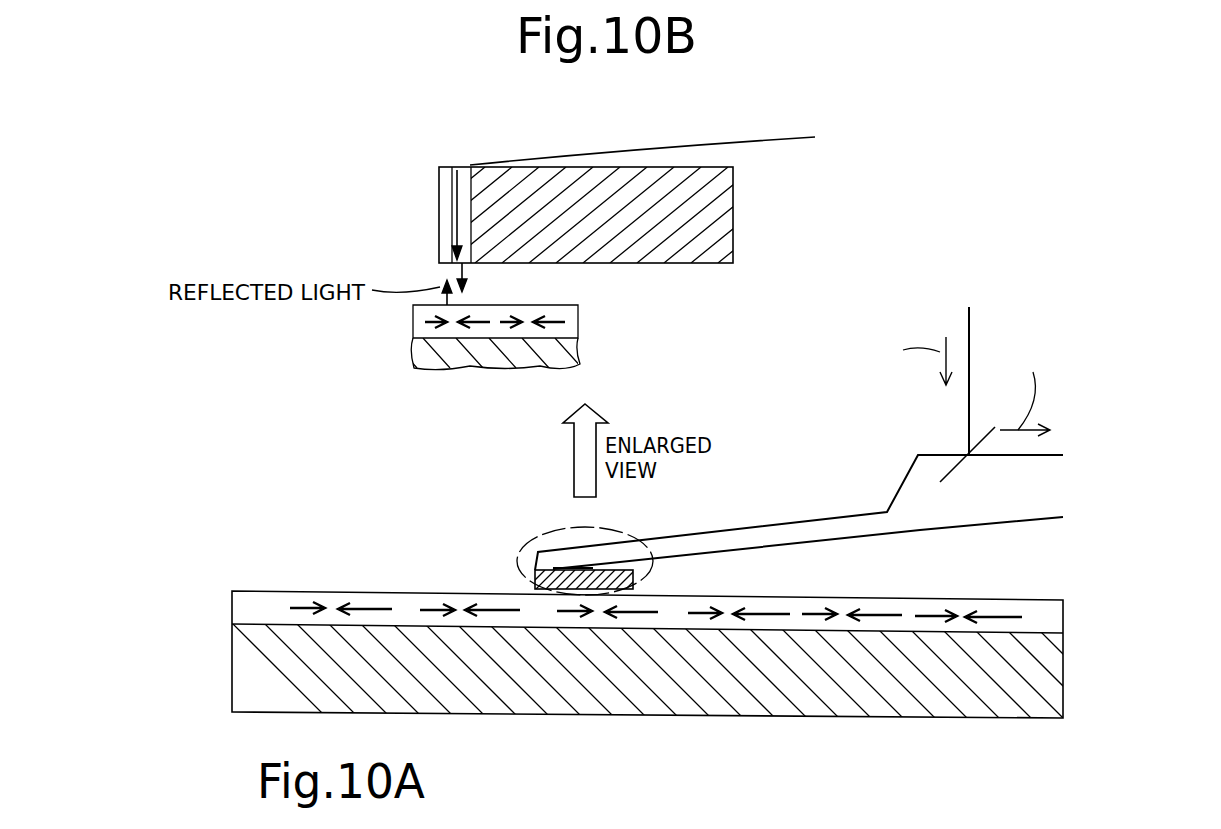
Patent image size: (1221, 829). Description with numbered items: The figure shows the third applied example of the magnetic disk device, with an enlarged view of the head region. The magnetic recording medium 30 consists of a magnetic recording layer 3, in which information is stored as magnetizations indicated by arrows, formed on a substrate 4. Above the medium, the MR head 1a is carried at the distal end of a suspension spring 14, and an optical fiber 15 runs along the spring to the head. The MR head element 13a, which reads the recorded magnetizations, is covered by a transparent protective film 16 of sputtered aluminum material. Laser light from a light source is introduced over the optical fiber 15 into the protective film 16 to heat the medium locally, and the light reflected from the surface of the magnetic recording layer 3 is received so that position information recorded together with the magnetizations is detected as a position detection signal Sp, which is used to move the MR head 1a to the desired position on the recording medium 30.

In FIG. 10B, the MR head 1a is at (412, 150).
In FIG. 10A, the MR head 1a is at (506, 572).
In FIG. 10B, the magnetic recording layer 3 is at (563, 312).
In FIG. 10A, the magnetic recording layer 3 is at (258, 608).
In FIG. 10B, the substrate 4 is at (557, 352).
In FIG. 10A, the substrate 4 is at (622, 707).
In FIG. 10B, the MR head element 13a is at (456, 160).
In FIG. 10A, the MR head element 13a is at (535, 565).
In FIG. 10A, the suspension spring 14 is at (893, 532).
In FIG. 10B, the optical fiber 15 is at (702, 143).
In FIG. 10A, the optical fiber 15 is at (846, 512).
In FIG. 10B, the protective film 16 is at (440, 212).
In FIG. 10A, the magnetic recording medium 30 is at (218, 666).